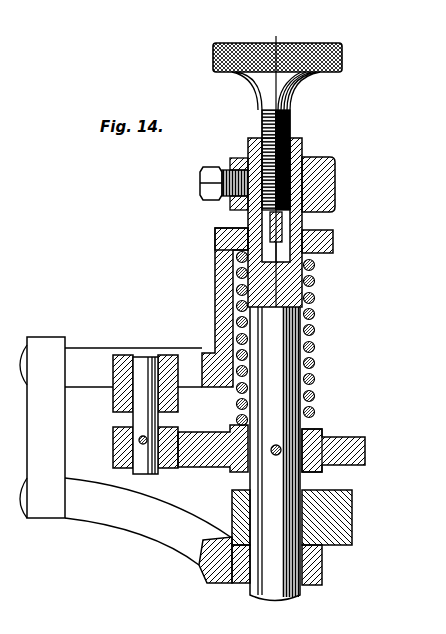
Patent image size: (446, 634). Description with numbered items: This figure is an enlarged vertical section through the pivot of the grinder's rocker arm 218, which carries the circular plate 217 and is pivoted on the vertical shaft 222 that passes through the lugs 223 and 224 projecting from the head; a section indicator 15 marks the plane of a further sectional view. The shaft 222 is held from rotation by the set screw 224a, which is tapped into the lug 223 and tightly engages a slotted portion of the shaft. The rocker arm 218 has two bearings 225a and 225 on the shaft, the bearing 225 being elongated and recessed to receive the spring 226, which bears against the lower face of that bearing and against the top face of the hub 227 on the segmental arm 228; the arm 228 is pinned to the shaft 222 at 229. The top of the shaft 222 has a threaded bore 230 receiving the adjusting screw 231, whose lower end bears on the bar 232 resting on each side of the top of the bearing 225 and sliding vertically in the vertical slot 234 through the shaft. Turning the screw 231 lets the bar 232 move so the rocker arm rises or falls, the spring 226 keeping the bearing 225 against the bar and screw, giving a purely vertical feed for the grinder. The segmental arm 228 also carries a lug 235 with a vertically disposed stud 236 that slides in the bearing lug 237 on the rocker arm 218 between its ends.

The section line 15- 15 is at (245, 34).
The circular plate 217 is at (38, 336).
The rocker arm 218 is at (111, 348).
The vertical shaft 222 is at (248, 218).
The lug 223 is at (333, 176).
The lug 224 is at (336, 506).
The set screw 224a is at (210, 195).
The bearing 225 is at (322, 242).
The bearing 225a is at (318, 560).
The spring 226 is at (314, 276).
The hub 227 is at (306, 437).
The segmental arm 228 is at (207, 440).
The pin 229 is at (273, 456).
The threaded bore 230 is at (302, 152).
The adjusting screw 231 is at (296, 92).
The bar 232 is at (305, 219).
The vertical slot 234 is at (225, 243).
The lug 235 is at (125, 452).
The stud 236 is at (140, 418).
The bearing lug 237 is at (113, 374).